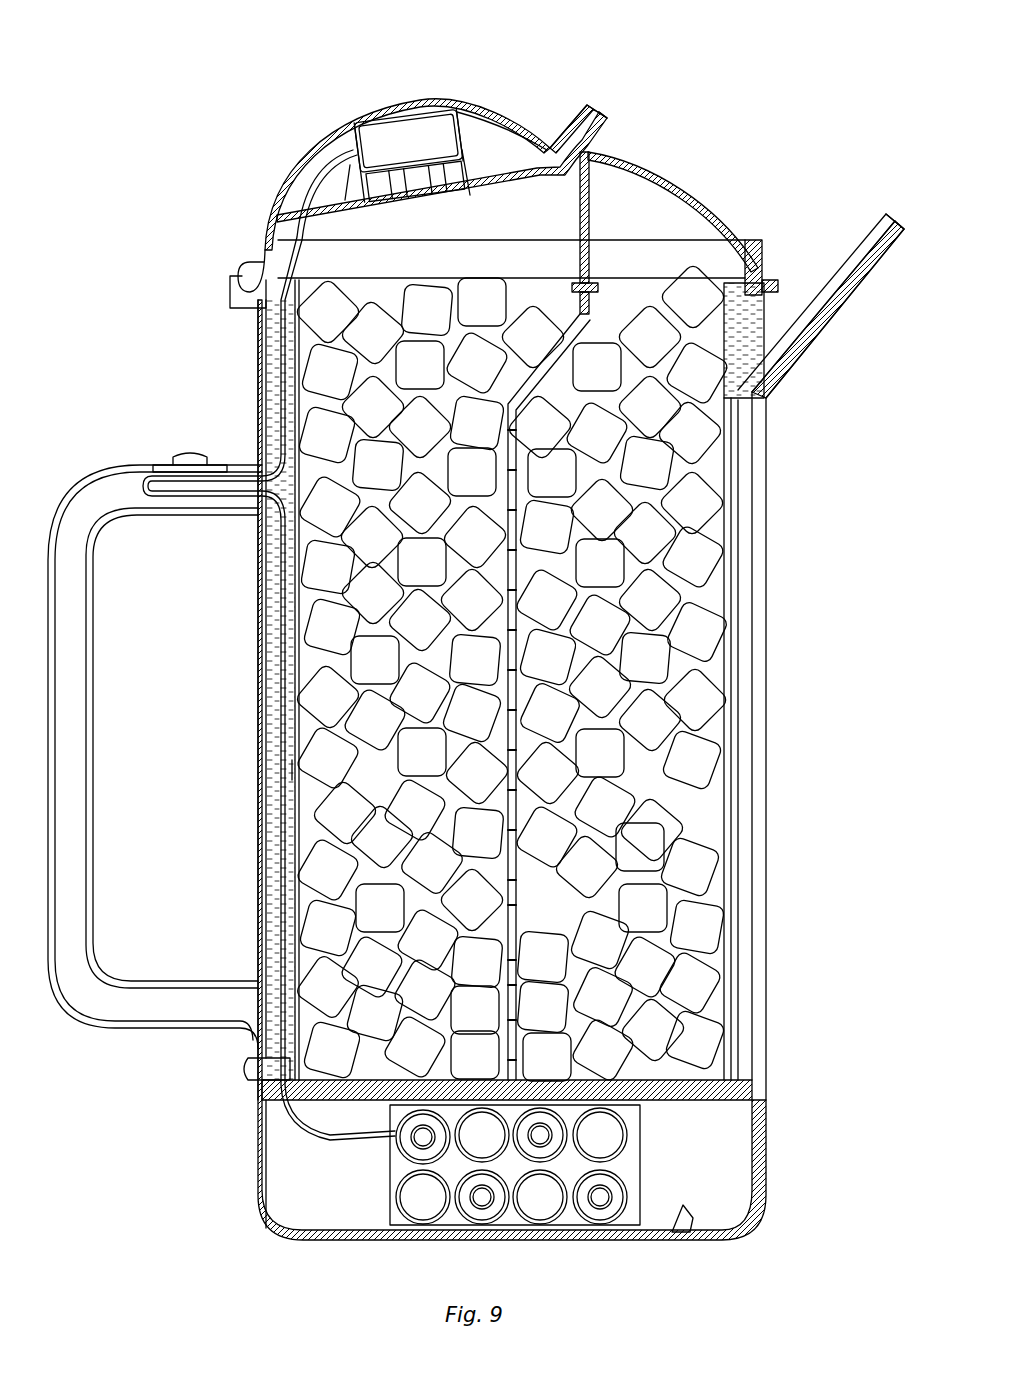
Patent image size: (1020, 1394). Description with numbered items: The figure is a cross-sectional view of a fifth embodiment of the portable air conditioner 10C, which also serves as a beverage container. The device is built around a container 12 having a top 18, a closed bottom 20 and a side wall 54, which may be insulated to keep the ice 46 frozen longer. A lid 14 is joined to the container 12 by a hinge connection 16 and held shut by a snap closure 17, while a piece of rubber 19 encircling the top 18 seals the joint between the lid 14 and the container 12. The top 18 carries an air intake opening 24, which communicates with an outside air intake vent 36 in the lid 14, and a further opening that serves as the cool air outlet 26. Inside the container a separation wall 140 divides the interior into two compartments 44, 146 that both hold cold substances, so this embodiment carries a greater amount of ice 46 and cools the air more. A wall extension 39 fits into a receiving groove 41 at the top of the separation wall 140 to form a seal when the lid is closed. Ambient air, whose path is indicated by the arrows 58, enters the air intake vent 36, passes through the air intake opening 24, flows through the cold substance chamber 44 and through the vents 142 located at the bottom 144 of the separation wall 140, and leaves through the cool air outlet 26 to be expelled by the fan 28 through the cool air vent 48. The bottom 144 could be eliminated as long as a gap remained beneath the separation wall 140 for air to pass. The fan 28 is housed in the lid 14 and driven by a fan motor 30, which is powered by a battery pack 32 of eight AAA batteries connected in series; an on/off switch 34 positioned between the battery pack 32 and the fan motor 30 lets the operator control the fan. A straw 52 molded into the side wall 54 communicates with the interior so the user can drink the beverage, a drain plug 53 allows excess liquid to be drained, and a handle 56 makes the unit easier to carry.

The portable air conditioner 10C is at (150, 97).
The container 12 is at (258, 358).
The lid 14 is at (327, 130).
The hinge connection 16 is at (243, 292).
The snap closure 17 is at (817, 277).
The top 18 is at (532, 277).
The piece of rubber 19 is at (770, 277).
The bottom 20 is at (592, 1050).
The air intake opening 24 is at (700, 270).
The cool air outlet 26 is at (483, 280).
The fan 28 is at (487, 100).
The fan motor 30 is at (385, 135).
The battery pack 32 is at (477, 1138).
The on/off switch 34 is at (183, 455).
The outside air intake vent 36 is at (640, 175).
The wall extension 39 is at (590, 220).
The receiving groove 41 is at (580, 272).
The cold substance chamber 44 is at (296, 770).
The ice 46 is at (323, 630).
The cool air vent 48 is at (593, 105).
The straw 52 is at (877, 227).
The drain plug 53 is at (247, 1063).
The side wall 54 is at (270, 330).
The handle 56 is at (93, 683).
The air flow 58 is at (387, 260).
The separation wall 140 is at (512, 567).
The vents 142 is at (515, 902).
The bottom 144 is at (513, 978).
The compartment 146 is at (713, 533).